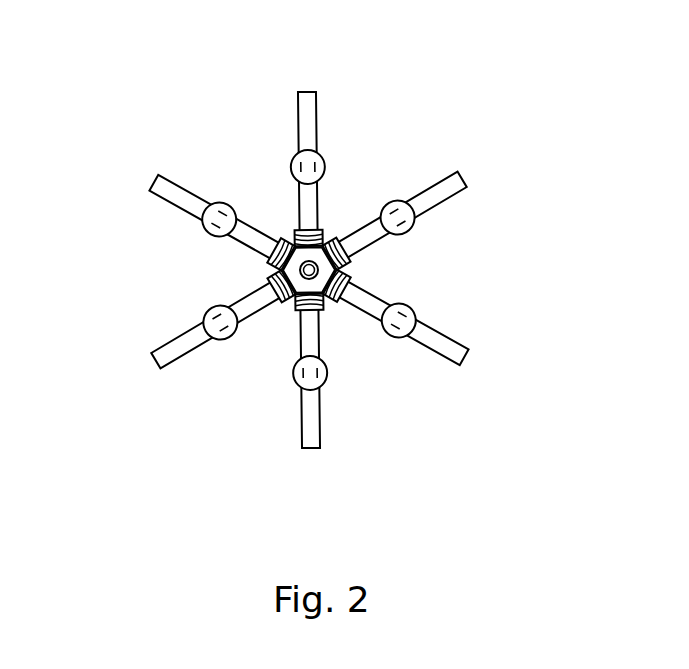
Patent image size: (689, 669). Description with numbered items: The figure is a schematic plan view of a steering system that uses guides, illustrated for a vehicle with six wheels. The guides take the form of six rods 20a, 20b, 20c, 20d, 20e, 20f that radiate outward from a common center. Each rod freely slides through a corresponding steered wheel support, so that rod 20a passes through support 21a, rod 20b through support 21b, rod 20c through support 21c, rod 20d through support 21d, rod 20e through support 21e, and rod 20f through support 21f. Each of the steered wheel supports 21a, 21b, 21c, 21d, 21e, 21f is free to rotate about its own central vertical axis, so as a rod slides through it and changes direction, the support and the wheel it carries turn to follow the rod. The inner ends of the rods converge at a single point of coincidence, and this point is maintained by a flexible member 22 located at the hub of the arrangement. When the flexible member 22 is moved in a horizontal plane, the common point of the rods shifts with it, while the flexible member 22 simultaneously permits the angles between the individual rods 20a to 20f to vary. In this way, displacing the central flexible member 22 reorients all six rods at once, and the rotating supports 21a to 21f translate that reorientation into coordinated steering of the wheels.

The rod 20a is at (306, 88).
The rod 20b is at (149, 175).
The rod 20c is at (150, 367).
The rod 20d is at (312, 452).
The rod 20e is at (476, 359).
The rod 20f is at (470, 177).
The steered wheel support 21a is at (329, 162).
The steered wheel support 21b is at (217, 200).
The steered wheel support 21c is at (202, 305).
The steered wheel support 21d is at (291, 379).
The steered wheel support 21e is at (391, 343).
The steered wheel support 21f is at (407, 243).
The flexible member 22 is at (325, 231).